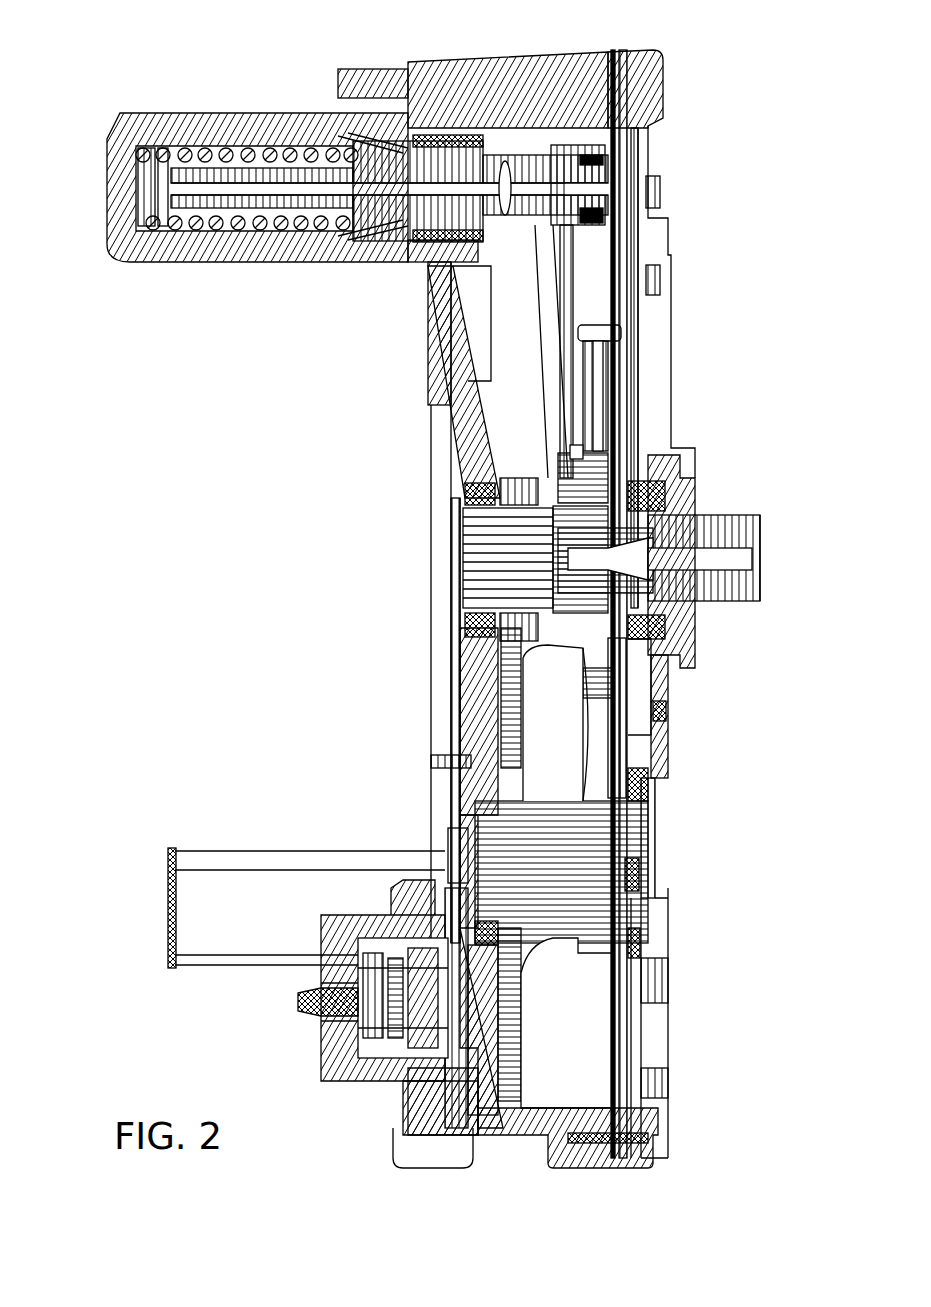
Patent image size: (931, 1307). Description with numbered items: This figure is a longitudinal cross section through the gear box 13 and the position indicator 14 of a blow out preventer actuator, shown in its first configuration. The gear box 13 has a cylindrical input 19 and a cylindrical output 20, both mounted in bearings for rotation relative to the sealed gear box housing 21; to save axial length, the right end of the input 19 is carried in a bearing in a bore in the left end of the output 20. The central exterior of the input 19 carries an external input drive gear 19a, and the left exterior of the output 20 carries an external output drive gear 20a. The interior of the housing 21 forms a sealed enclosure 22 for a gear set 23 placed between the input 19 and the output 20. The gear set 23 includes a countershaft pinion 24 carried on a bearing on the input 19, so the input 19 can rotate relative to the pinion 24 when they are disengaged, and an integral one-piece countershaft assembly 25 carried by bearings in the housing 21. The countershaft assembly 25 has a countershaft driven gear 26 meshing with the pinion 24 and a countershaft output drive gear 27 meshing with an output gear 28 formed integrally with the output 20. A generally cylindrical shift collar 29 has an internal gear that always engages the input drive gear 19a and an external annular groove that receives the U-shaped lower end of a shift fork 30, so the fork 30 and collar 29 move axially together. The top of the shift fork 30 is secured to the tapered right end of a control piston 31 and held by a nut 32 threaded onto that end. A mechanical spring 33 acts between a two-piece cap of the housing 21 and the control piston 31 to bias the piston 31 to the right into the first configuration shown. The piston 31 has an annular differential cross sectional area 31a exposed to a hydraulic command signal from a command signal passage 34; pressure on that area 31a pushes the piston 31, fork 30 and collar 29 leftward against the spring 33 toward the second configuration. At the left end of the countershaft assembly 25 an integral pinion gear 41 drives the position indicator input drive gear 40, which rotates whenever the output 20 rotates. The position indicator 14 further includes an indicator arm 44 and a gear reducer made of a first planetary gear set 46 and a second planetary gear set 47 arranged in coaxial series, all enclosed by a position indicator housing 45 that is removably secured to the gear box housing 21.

The gear box 13 is at (652, 40).
The position indicator 14 is at (398, 1120).
The input 19 is at (472, 588).
The external input drive gear 19a is at (528, 646).
The output 20 is at (736, 590).
The external output drive gear 20a is at (588, 465).
The gear box housing 21 is at (552, 50).
The sealed enclosure 22 is at (582, 1055).
The gear set 23 is at (537, 958).
The countershaft pinion 24 is at (506, 470).
The countershaft assembly 25 is at (536, 788).
The countershaft driven gear 26 is at (510, 1088).
The countershaft output drive gear 27 is at (583, 935).
The output gear 28 is at (613, 760).
The shift collar 29 is at (580, 655).
The shift fork 30 is at (568, 300).
The control piston 31 is at (436, 135).
The annular differential cross sectional area 31a is at (350, 240).
The nut 32 is at (590, 138).
The mechanical spring 33 is at (228, 254).
The command signal passage 34 is at (410, 228).
The position indicator input drive gear 40 is at (458, 1120).
The pinion gear 41 is at (460, 820).
The indicator arm 44 is at (310, 1016).
The position indicator housing 45 is at (313, 1055).
The first position indicator planetary gear set 46 is at (403, 1081).
The second position indicator planetary gear set 47 is at (380, 903).